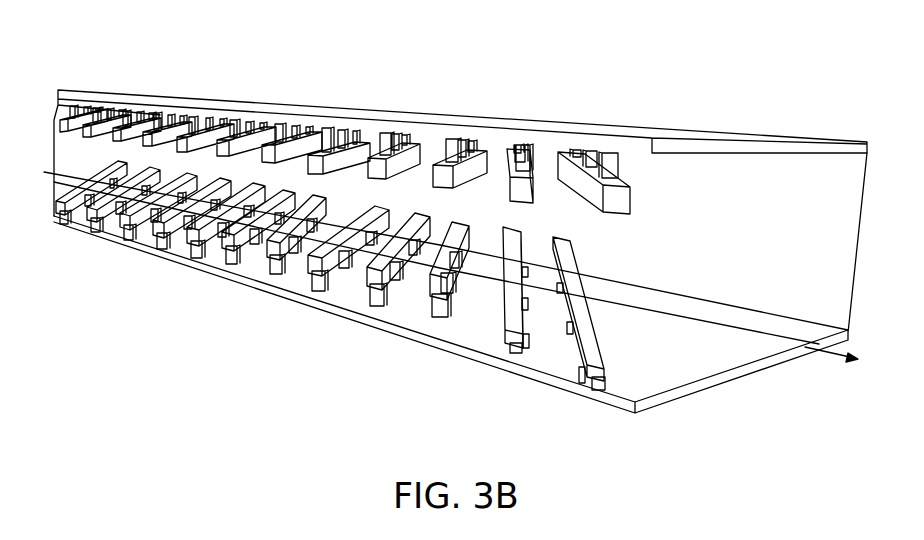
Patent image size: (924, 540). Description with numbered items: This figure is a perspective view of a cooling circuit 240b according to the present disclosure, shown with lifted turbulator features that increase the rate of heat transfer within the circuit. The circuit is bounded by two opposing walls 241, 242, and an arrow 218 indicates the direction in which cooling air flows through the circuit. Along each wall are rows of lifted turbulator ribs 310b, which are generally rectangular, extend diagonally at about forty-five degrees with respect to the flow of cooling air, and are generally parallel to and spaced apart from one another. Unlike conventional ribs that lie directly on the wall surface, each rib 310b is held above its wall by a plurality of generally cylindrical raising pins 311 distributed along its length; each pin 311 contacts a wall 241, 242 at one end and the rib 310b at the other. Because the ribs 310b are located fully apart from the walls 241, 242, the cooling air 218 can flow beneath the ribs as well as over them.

The cooling circuit 240b is at (455, 223).
The wall 241 is at (140, 107).
The wall 242 is at (143, 251).
The lifted turbulator rib 310b is at (317, 155).
The raising pin 311 is at (447, 142).
The cooling air flow direction arrow 218 is at (831, 355).